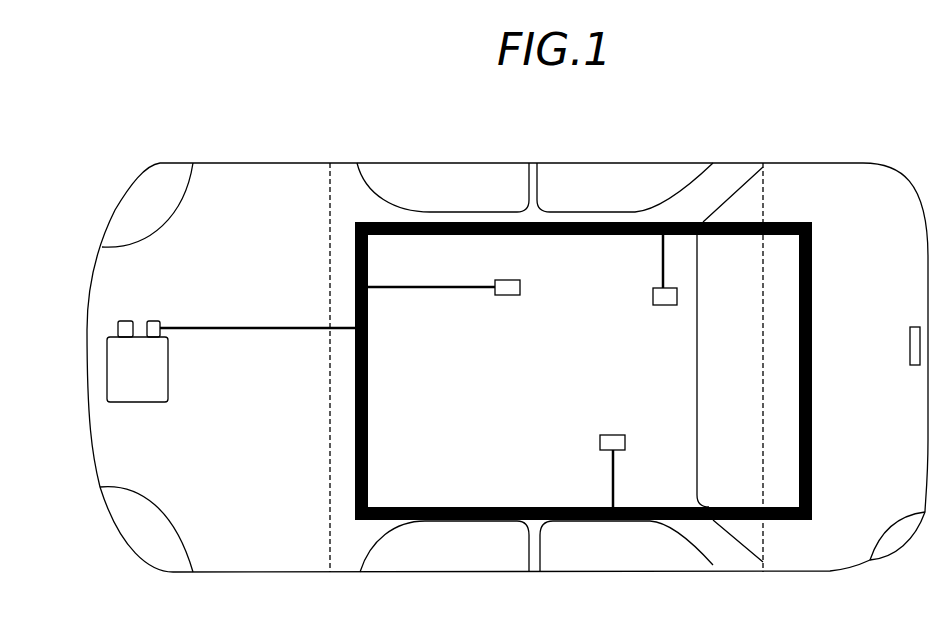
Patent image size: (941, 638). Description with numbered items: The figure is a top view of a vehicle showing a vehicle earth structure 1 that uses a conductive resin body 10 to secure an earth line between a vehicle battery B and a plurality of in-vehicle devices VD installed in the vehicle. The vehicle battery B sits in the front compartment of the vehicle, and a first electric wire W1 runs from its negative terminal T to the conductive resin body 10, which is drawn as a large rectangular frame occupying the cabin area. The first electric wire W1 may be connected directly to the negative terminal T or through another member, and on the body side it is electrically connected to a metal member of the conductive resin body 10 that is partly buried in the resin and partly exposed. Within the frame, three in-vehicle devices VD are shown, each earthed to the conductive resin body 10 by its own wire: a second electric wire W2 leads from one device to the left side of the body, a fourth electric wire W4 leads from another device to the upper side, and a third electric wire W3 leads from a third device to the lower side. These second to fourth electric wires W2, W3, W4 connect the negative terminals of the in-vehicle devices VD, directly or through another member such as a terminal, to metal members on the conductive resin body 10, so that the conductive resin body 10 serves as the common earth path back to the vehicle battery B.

The vehicle earth structure 1 is at (773, 144).
The conductive resin body 10 is at (812, 405).
The vehicle battery B is at (100, 352).
The negative terminal T is at (150, 320).
The first electric wire W1 is at (245, 328).
The second electric wire W2 is at (477, 290).
The third electric wire W3 is at (610, 485).
The fourth electric wire W4 is at (663, 275).
The in-vehicle devices VD is at (520, 287).